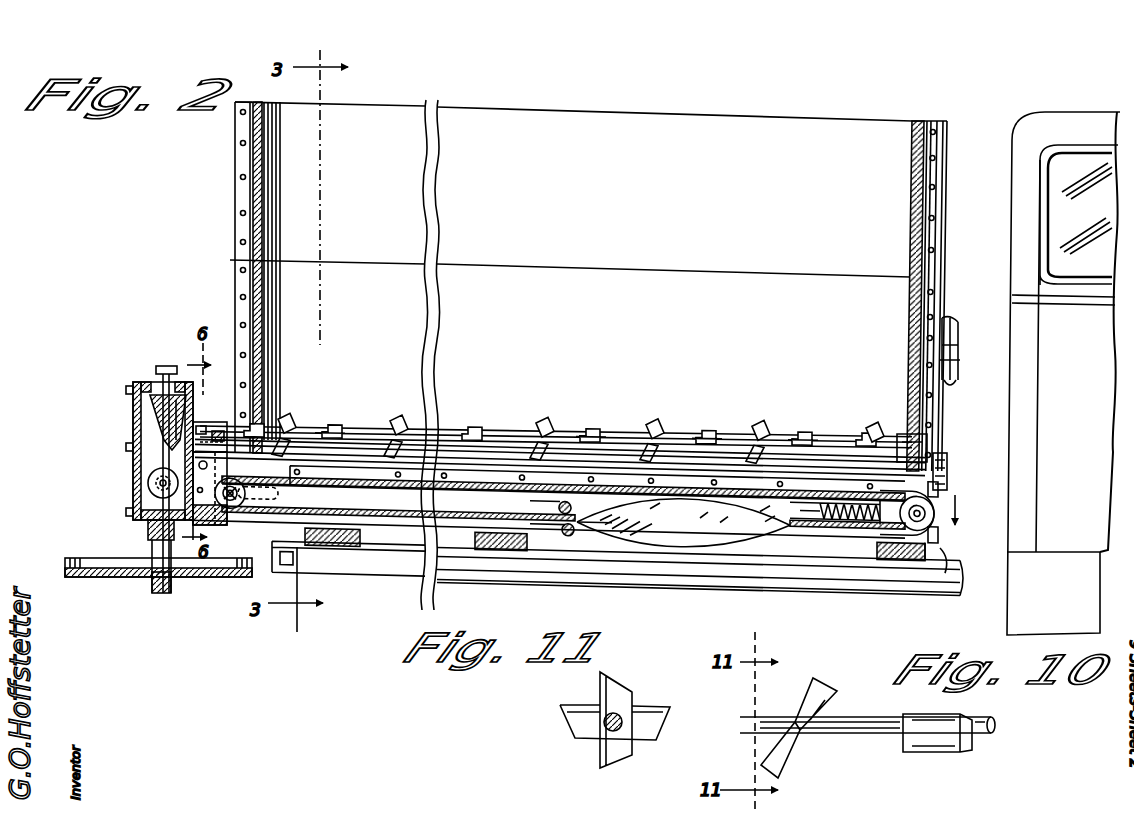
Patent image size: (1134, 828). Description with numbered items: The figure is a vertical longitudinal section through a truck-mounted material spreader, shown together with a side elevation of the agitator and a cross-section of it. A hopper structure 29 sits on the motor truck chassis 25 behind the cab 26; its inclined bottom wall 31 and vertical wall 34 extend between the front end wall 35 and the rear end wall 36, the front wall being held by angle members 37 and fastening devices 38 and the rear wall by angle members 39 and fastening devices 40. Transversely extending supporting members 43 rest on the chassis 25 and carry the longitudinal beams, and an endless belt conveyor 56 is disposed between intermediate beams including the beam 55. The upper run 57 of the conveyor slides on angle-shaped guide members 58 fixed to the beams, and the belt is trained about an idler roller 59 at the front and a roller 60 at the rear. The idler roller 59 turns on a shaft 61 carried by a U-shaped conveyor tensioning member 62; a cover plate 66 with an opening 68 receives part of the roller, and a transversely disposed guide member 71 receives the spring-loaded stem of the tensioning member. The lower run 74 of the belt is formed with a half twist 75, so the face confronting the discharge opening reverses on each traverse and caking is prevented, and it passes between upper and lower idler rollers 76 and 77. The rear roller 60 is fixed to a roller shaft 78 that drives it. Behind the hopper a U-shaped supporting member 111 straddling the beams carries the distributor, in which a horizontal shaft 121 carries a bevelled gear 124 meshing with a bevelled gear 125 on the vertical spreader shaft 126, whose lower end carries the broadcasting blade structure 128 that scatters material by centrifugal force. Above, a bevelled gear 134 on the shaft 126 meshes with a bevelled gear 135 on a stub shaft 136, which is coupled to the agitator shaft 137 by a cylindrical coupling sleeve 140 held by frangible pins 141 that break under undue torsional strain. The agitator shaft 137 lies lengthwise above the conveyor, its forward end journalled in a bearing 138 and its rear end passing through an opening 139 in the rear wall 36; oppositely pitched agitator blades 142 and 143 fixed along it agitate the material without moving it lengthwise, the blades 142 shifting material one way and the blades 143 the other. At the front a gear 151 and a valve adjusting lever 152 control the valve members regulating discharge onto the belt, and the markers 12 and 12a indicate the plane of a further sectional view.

In FIG. 2, the frame bar 12 is at (772, 502).
In FIG. 2, the frame bar end 12a is at (973, 500).
In FIG. 2, the motor truck chassis 25 is at (750, 580).
In FIG. 2, the cab 26 is at (1063, 373).
In FIG. 2, the hopper structure 29 is at (231, 232).
In FIG. 2, the bottom wall 31 is at (570, 285).
In FIG. 2, the vertical wall 34 is at (573, 154).
In FIG. 2, the front end wall 35 is at (912, 207).
In FIG. 2, the rear end wall 36 is at (250, 200).
In FIG. 2, the angle members 37 is at (938, 168).
In FIG. 2, the fastening devices 38 is at (953, 296).
In FIG. 2, the angle members 39 is at (233, 128).
In FIG. 2, the fastening devices 40 is at (242, 176).
In FIG. 2, the supporting members 43 is at (497, 546).
In FIG. 2, the beam 55 is at (698, 565).
In FIG. 2, the endless belt conveyor 56 is at (348, 558).
In FIG. 2, the upper run 57 is at (683, 522).
In FIG. 2, the angle-shaped guide members 58 is at (478, 486).
In FIG. 2, the idler roller 59 is at (936, 496).
In FIG. 2, the roller 60 is at (235, 480).
In FIG. 2, the shaft 61 is at (937, 514).
In FIG. 2, the U-shaped conveyor tensioning member 62 is at (880, 508).
In FIG. 2, the cover plate 66 is at (945, 546).
In FIG. 2, the cutout or opening 68 is at (928, 471).
In FIG. 2, the guide member 71 is at (838, 506).
In FIG. 2, the lower run 74 is at (540, 520).
In FIG. 2, the half twist 75 is at (680, 525).
In FIG. 2, the upper idler roller 76 is at (558, 501).
In FIG. 2, the lower idler roller 77 is at (570, 530).
In FIG. 2, the roller shaft 78 is at (232, 505).
In FIG. 2, the U-shaped supporting member 111 is at (237, 438).
In FIG. 2, the shaft 121 is at (160, 488).
In FIG. 2, the bevelled gear 124 is at (150, 482).
In FIG. 2, the bevelled gear 125 is at (140, 522).
In FIG. 2, the spreader shaft 126 is at (160, 455).
In FIG. 2, the distributing or broadcasting blade structure 128 is at (117, 580).
In FIG. 2, the bevelled gear 134 is at (150, 382).
In FIG. 2, the bevelled gear 135 is at (168, 420).
In FIG. 2, the stub shaft 136 is at (200, 397).
In FIG. 2, the agitator shaft 137 is at (345, 426).
In FIG. 11, the agitator shaft 137 is at (622, 714).
In FIG. 10, the agitator shaft 137 is at (862, 737).
In FIG. 2, the bearing 138 is at (905, 437).
In FIG. 2, the opening 139 is at (237, 436).
In FIG. 2, the cylindrical coupling sleeve 140 is at (178, 437).
In FIG. 2, the frangible pins 141 is at (210, 420).
In FIG. 2, the agitator blades 142 is at (478, 422).
In FIG. 11, the agitator blades 142 is at (570, 717).
In FIG. 10, the agitator blades 142 is at (918, 744).
In FIG. 2, the agitator blades 143 is at (645, 422).
In FIG. 11, the agitator blades 143 is at (597, 752).
In FIG. 10, the agitator blades 143 is at (822, 700).
In FIG. 2, the gear 151 is at (950, 480).
In FIG. 2, the valve adjusting lever 152 is at (958, 380).